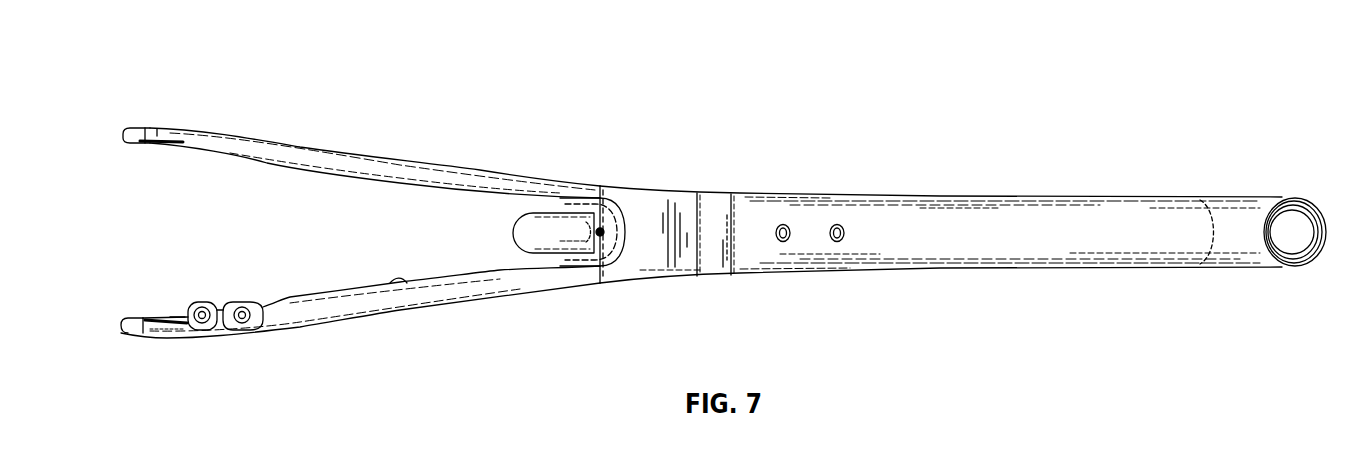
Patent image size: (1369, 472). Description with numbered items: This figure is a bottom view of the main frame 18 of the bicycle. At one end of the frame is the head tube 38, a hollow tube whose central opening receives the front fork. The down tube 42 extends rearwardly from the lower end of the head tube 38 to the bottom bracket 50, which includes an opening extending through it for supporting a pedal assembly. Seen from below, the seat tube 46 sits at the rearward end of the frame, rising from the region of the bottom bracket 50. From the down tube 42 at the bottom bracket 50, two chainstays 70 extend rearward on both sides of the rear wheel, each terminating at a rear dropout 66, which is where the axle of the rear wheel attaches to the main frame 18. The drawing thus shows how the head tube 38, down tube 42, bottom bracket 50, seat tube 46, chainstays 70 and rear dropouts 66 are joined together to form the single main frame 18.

The main frame 18 is at (808, 123).
The head tube 38 is at (1308, 262).
The down tube 42 is at (1098, 218).
The seat tube 46 is at (565, 227).
The bottom bracket 50 is at (723, 197).
The rear dropout 66 is at (134, 139).
The chainstays 70 is at (360, 158).